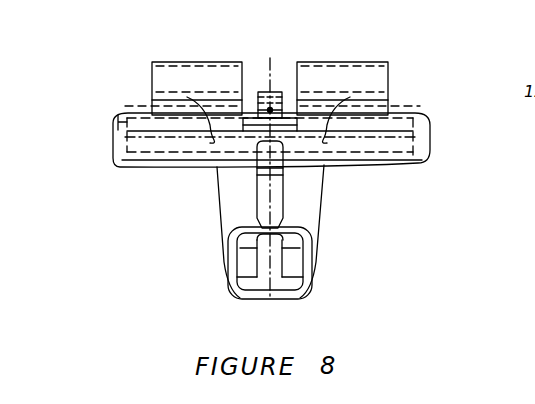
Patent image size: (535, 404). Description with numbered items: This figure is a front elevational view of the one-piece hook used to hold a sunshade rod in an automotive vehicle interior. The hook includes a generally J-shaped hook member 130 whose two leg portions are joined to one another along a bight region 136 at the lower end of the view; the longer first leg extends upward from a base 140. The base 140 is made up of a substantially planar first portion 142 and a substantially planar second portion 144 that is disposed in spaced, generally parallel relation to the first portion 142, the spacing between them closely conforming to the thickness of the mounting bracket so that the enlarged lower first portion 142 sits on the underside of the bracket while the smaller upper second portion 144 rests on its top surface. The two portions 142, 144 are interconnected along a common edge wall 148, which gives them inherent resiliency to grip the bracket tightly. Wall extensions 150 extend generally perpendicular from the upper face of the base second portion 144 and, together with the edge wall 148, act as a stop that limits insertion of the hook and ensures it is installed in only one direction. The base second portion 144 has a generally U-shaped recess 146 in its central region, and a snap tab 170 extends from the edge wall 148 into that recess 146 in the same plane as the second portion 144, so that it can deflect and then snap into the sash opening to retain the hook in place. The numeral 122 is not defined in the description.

The stem 122 is at (328, 218).
The hook member 130 is at (193, 242).
The bight region 136 is at (242, 270).
The base 140 is at (115, 183).
The base first portion 142 is at (372, 160).
The base second portion 144 is at (395, 115).
The recess 146 is at (269, 58).
The edge wall 148 is at (145, 100).
The wall extensions 150 is at (236, 44).
The snap tab 170 is at (278, 68).